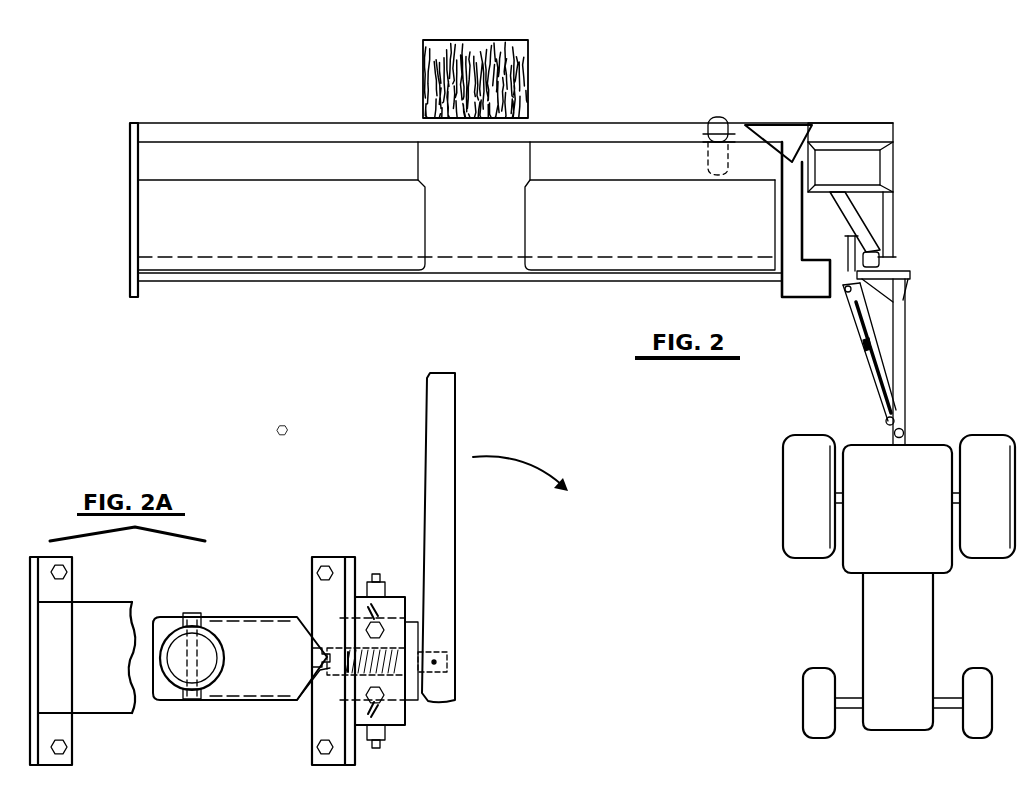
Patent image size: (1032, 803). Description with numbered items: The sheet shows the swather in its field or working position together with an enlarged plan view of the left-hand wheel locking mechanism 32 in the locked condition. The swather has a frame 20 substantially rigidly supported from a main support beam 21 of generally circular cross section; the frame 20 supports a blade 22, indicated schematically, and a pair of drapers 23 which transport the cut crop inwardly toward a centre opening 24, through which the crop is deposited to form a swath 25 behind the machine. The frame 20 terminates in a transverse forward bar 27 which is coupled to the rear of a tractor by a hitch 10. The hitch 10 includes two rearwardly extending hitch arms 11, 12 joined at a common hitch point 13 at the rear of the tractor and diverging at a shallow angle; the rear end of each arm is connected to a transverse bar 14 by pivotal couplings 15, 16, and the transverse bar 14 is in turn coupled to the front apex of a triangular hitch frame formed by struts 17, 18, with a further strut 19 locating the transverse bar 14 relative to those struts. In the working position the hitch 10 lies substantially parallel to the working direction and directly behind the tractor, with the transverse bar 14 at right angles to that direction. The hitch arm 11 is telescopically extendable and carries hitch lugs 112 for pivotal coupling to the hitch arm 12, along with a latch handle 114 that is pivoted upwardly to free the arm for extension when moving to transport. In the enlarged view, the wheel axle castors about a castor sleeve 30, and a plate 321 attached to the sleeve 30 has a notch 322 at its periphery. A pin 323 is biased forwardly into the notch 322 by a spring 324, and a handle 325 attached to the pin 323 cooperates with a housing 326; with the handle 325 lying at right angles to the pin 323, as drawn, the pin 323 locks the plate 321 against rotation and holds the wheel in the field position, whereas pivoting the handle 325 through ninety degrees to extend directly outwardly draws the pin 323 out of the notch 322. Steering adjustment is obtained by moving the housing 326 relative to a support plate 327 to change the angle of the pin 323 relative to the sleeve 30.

In FIG. 2, the hitch 10 is at (910, 355).
In FIG. 2, the hitch arm 11 is at (878, 366).
In FIG. 2, the hitch arm 12 is at (904, 384).
In FIG. 2, the hitch point 13 is at (905, 433).
In FIG. 2, the transverse bar 14 is at (858, 305).
In FIG. 2, the pivotal coupling 15 is at (845, 288).
In FIG. 2, the pivotal coupling 16 is at (896, 283).
In FIG. 2, the strut 17 is at (886, 226).
In FIG. 2, the strut 18 is at (842, 206).
In FIG. 2, the strut 19 is at (848, 251).
In FIG. 2, the frame 20 is at (583, 292).
In FIG. 2, the main support beam 21 is at (600, 129).
In FIG. 2, the blade 22 is at (440, 279).
In FIG. 2, the drapers 23 is at (307, 241).
In FIG. 2, the centre opening 24 is at (442, 167).
In FIG. 2, the swath 25 is at (528, 74).
In FIG. 2, the transverse forward bar 27 is at (870, 178).
In FIG. 2A, the castor sleeve 30 is at (176, 622).
In FIG. 2, the locking mechanism 32 is at (702, 123).
In FIG. 2A, the locking mechanism 32 is at (490, 593).
In FIG. 2, the hitch lugs 112 is at (887, 420).
In FIG. 2, the handle 114 is at (862, 347).
In FIG. 2A, the plate 321 is at (268, 630).
In FIG. 2A, the notch 322 is at (313, 651).
In FIG. 2A, the pin 323 is at (318, 668).
In FIG. 2A, the spring 324 is at (392, 664).
In FIG. 2A, the handle 325 is at (444, 519).
In FIG. 2A, the housing 326 is at (392, 600).
In FIG. 2A, the support plate 327 is at (333, 563).